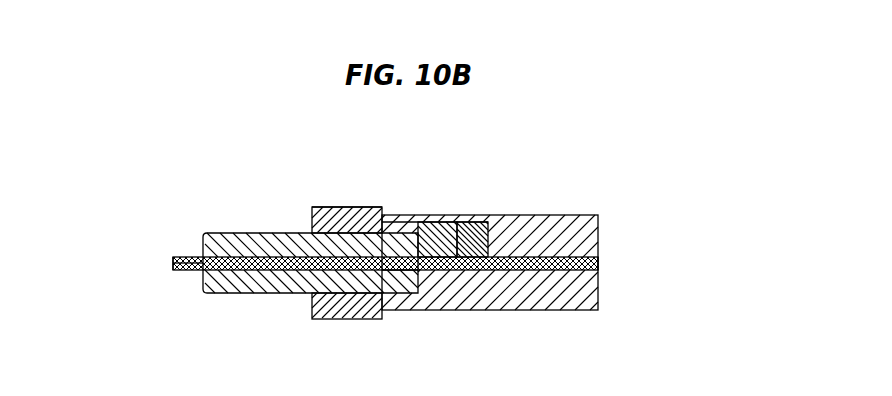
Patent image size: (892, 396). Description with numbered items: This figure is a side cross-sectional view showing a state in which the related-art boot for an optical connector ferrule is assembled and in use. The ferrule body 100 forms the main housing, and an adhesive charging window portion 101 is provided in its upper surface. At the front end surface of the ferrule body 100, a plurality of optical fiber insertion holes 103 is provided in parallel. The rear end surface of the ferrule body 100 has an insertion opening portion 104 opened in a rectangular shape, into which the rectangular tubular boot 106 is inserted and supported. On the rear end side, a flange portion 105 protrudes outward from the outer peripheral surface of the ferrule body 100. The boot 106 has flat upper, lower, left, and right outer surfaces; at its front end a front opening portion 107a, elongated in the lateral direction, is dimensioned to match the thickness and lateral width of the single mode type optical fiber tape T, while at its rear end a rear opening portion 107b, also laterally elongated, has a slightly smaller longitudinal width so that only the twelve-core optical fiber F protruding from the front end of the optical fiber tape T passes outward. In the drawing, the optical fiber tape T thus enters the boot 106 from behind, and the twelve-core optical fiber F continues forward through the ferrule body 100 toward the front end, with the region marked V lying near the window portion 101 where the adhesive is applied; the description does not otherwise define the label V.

The ferrule body 100 is at (298, 200).
The adhesive charging window portion 101 is at (423, 222).
The optical fiber insertion holes 103 is at (598, 262).
The insertion opening portion 104 is at (373, 287).
The flange portion 105 is at (340, 319).
The boot 106 is at (238, 235).
The front opening portion 107a is at (437, 266).
The rear opening portion 107b is at (205, 258).
The single mode type optical fiber tape T is at (175, 272).
The adhesive region V is at (478, 222).
The twelve-core optical fiber F is at (566, 262).